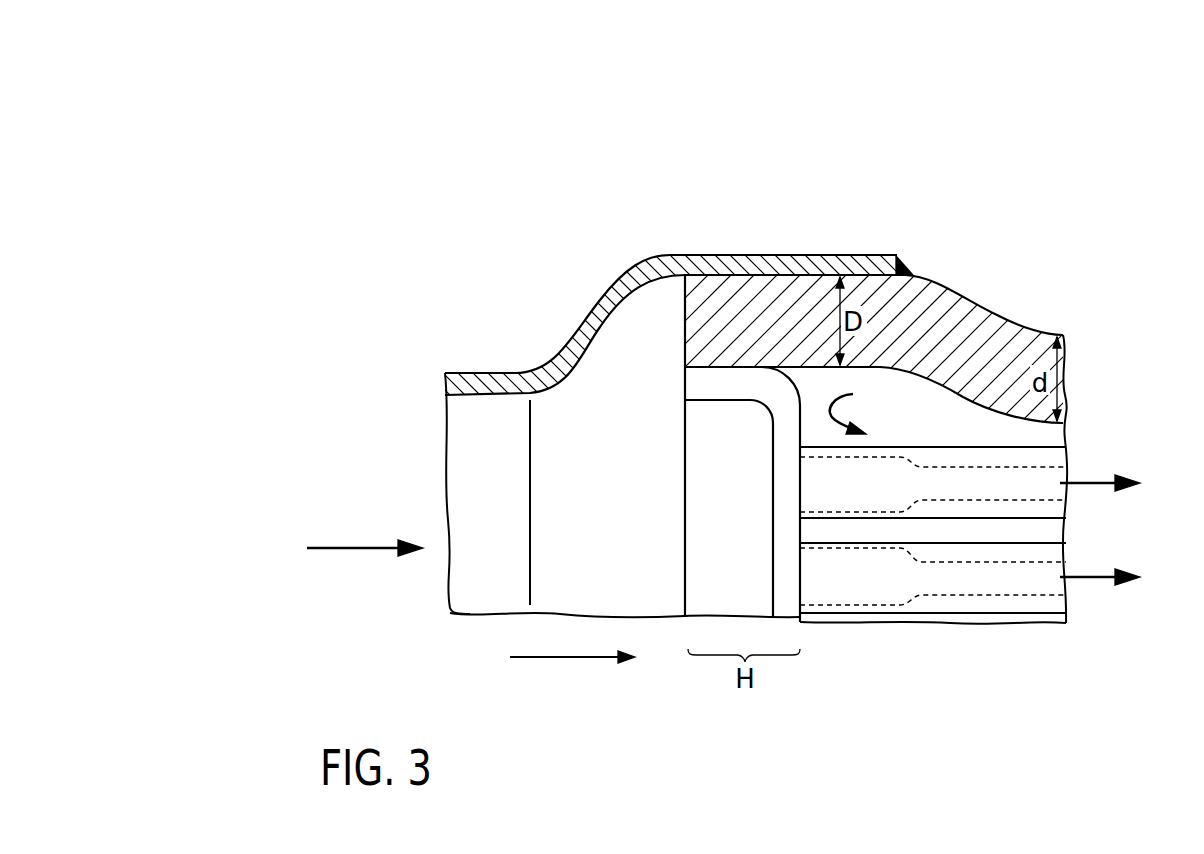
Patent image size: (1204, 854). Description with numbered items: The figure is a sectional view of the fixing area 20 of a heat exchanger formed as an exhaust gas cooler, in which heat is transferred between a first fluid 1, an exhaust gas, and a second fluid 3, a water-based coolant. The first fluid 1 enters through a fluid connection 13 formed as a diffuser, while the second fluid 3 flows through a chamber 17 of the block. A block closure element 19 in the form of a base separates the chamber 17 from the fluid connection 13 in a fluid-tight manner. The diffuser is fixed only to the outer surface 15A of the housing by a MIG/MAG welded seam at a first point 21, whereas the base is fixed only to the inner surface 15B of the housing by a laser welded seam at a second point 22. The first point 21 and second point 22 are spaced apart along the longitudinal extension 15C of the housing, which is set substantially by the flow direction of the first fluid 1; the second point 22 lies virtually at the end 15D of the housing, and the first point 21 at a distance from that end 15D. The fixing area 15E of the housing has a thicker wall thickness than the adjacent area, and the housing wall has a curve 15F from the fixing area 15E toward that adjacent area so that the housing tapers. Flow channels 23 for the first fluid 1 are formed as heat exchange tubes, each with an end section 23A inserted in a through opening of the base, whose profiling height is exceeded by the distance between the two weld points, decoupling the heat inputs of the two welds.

The first fluid 1 is at (357, 545).
The second fluid 3 is at (840, 396).
The fluid connection 13 is at (590, 318).
The outer surface 15A is at (950, 282).
The inner surface 15B is at (947, 386).
The longitudinal extension 15C is at (567, 660).
The end 15D is at (678, 310).
The fixing area 15E is at (918, 209).
The curve 15F is at (980, 372).
The chamber 17 is at (908, 439).
The block closure element 19 is at (778, 575).
The fixing area 20 is at (1090, 140).
The first point 21 is at (900, 267).
The second point 22 is at (684, 345).
The flow channels 23 is at (995, 580).
The end section 23A is at (805, 631).